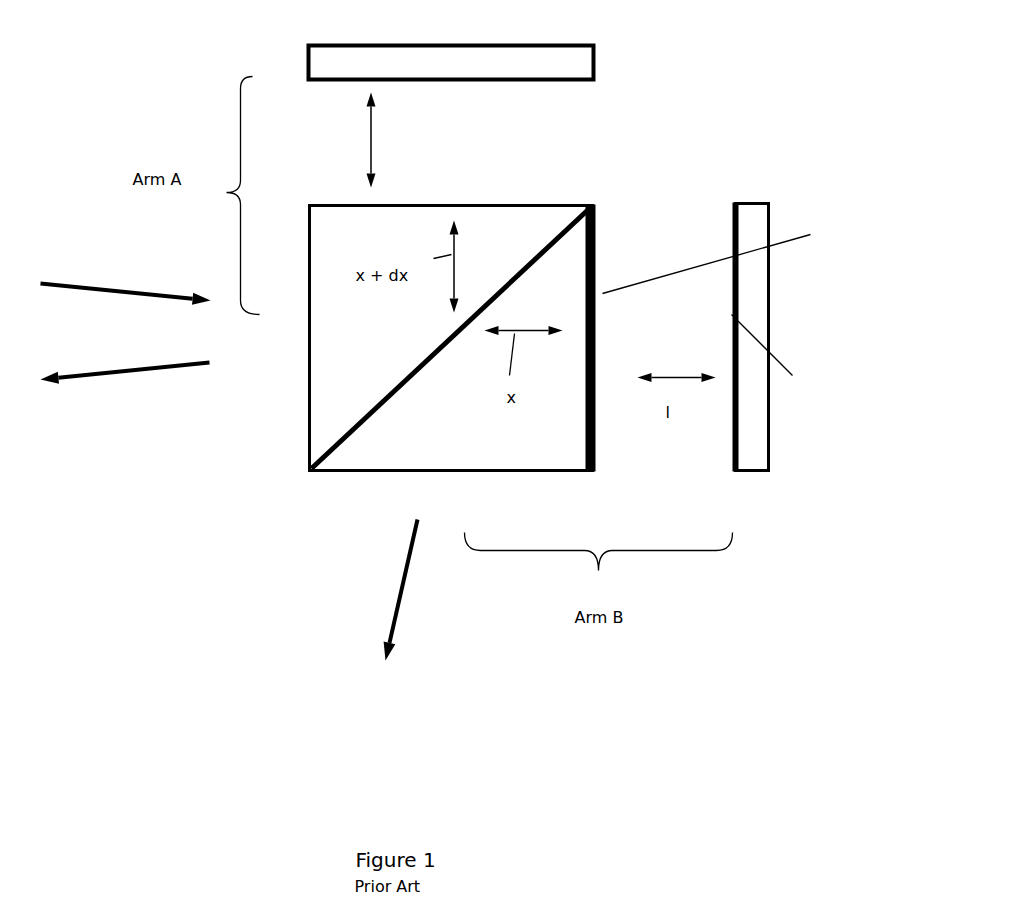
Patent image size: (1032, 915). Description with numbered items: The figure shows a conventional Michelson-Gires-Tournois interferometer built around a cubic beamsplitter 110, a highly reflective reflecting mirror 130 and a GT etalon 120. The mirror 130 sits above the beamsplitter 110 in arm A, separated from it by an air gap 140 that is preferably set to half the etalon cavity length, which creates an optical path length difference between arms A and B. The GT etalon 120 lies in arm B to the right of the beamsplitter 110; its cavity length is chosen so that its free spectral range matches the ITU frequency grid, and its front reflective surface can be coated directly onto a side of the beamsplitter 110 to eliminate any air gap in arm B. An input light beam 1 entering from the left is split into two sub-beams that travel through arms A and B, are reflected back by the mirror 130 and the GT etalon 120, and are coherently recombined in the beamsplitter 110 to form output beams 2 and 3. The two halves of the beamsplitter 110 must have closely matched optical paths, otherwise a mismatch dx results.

The input light beam 1 is at (129, 281).
The output beam 2 is at (128, 360).
The output beam 3 is at (383, 580).
The cubic beamsplitter 110 is at (275, 418).
The GT etalon 120 is at (672, 187).
The reflecting mirror 130 is at (585, 58).
The air gap 140 is at (430, 140).